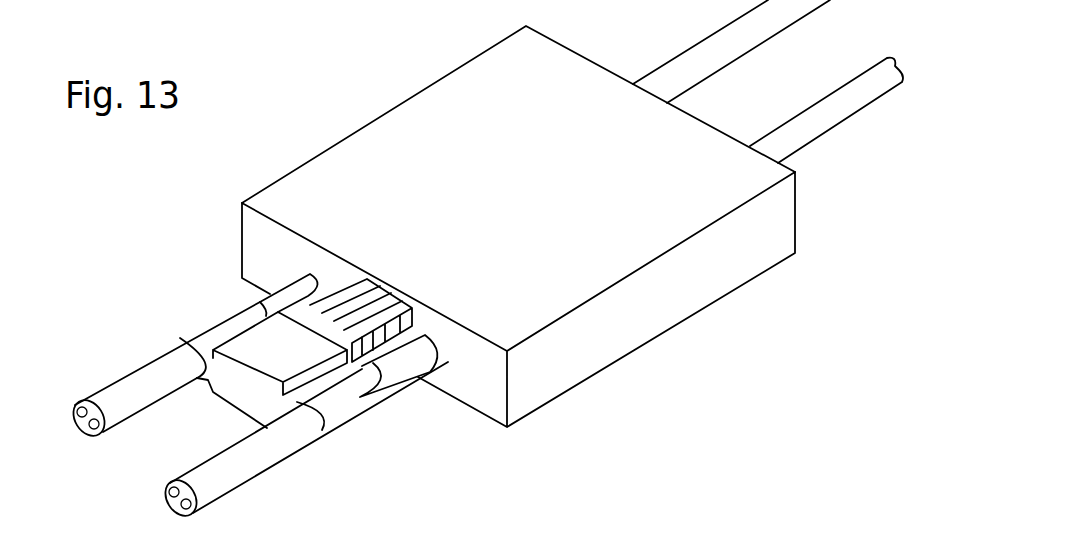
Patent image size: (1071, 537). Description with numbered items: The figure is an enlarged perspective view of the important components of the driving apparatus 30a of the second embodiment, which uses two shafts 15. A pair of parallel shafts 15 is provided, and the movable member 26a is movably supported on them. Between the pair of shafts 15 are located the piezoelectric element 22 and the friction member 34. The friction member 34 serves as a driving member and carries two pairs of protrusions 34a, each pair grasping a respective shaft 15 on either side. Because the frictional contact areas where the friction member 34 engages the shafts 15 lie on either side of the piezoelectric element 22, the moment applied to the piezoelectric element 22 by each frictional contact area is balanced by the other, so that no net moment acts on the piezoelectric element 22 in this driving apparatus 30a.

The shaft 15 is at (143, 377).
The piezoelectric element 22 is at (373, 322).
The movable member 26a is at (638, 333).
The driving apparatus 30a is at (380, 107).
The friction member 34 is at (242, 400).
The protrusion 34a is at (223, 322).